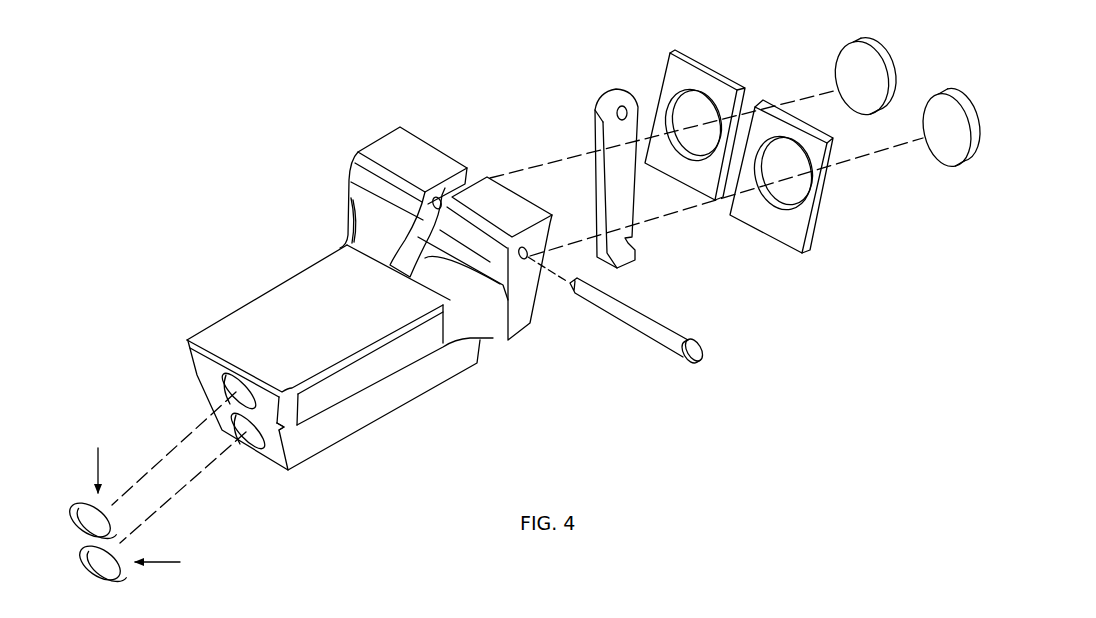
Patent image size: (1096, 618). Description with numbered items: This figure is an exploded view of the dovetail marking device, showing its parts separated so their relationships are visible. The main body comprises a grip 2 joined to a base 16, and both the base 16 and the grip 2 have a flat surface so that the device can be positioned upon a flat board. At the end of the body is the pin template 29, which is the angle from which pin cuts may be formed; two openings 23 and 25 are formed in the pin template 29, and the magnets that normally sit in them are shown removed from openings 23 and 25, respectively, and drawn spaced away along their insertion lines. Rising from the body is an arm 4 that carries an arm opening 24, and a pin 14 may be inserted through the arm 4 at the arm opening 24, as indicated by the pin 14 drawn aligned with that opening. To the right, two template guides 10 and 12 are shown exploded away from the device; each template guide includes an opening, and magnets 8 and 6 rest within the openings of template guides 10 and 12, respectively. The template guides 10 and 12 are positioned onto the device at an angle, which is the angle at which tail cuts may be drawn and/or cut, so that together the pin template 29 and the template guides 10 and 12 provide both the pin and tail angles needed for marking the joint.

The grip 2 is at (493, 340).
The arm 4 is at (616, 157).
The magnet 6 is at (924, 137).
The magnet 8 is at (838, 89).
The template guide 10 is at (695, 125).
The template guide 12 is at (781, 176).
The pin 14 is at (710, 349).
The base 16 is at (384, 405).
The opening 23 is at (228, 381).
The arm opening 24 is at (622, 106).
The opening 25 is at (262, 448).
The pin template 29 is at (286, 452).